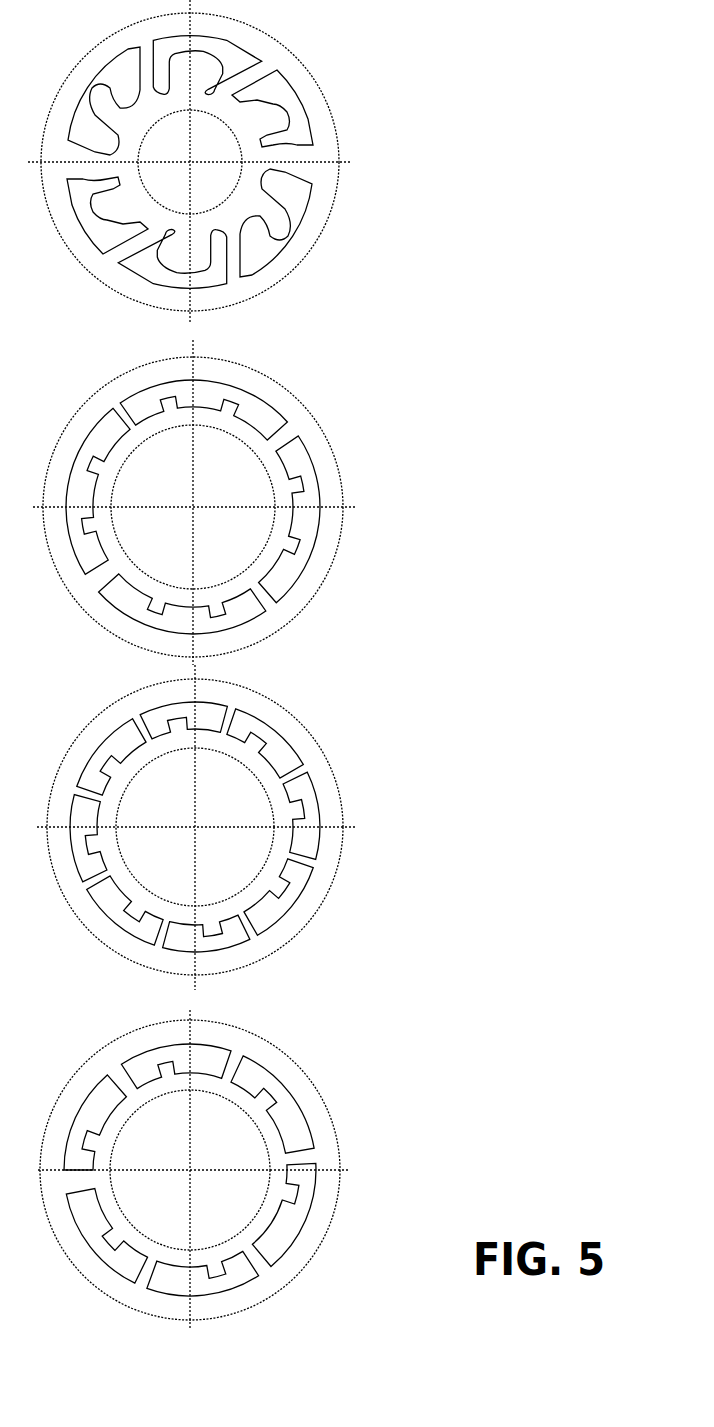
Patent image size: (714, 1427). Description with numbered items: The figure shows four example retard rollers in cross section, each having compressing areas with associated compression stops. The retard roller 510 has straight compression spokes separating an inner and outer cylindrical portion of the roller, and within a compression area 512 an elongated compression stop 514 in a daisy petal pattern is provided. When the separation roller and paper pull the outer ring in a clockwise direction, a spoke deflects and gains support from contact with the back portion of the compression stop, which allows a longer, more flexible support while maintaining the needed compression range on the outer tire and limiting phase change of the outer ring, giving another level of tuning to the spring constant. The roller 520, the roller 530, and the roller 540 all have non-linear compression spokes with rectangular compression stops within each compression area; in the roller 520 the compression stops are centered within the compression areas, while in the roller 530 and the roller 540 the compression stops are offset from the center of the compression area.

The retard roller 510 is at (220, 161).
The compression area 512 is at (239, 162).
The elongated compression stop 514 is at (292, 125).
The roller 520 is at (298, 388).
The roller 530 is at (293, 703).
The roller 540 is at (303, 1065).